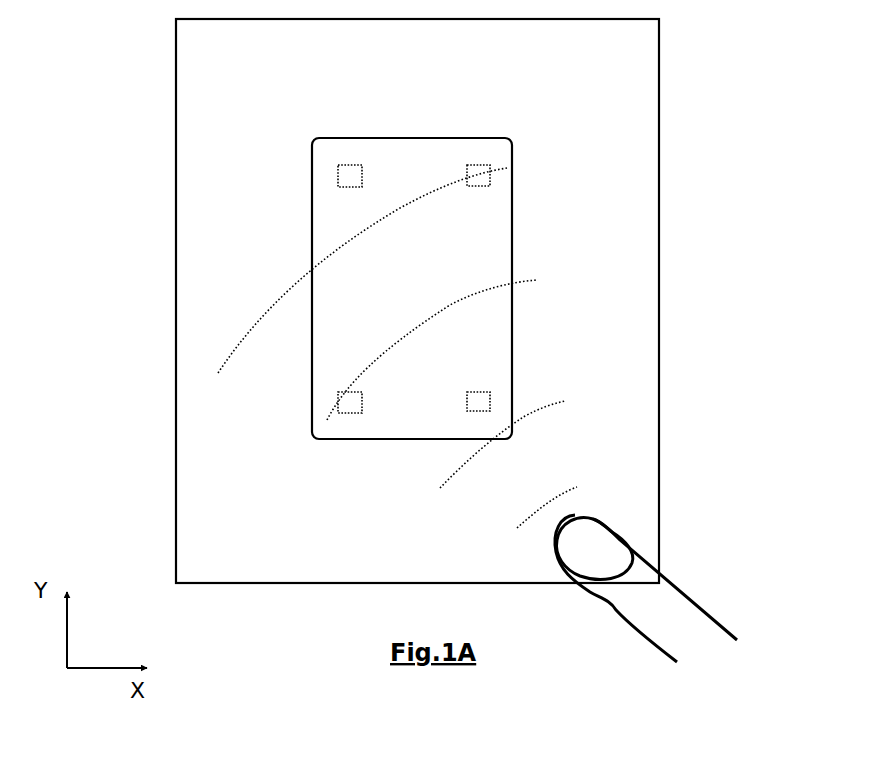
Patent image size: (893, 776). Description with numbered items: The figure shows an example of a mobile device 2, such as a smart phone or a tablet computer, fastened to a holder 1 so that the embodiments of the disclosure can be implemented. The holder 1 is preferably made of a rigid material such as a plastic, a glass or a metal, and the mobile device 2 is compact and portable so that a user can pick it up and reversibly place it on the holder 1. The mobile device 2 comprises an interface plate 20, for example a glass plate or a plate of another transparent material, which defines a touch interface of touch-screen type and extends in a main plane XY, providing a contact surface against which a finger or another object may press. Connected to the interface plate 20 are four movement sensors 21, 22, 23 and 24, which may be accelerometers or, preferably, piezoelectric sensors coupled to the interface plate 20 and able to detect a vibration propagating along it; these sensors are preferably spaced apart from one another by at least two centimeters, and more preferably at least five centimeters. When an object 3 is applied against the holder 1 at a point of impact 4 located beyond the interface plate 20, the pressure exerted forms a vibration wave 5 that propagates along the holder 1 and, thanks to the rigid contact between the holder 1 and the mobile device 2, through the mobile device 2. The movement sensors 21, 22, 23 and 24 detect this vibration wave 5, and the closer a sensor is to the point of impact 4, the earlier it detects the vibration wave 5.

The holder 1 is at (633, 216).
The mobile device 2 is at (515, 247).
The object 3 is at (646, 592).
The point of impact 4 is at (578, 526).
The vibration wave 5 is at (497, 303).
The interface plate 20 is at (413, 160).
The movement sensor 21 is at (479, 402).
The movement sensor 22 is at (346, 406).
The movement sensor 23 is at (348, 174).
The movement sensor 24 is at (480, 172).